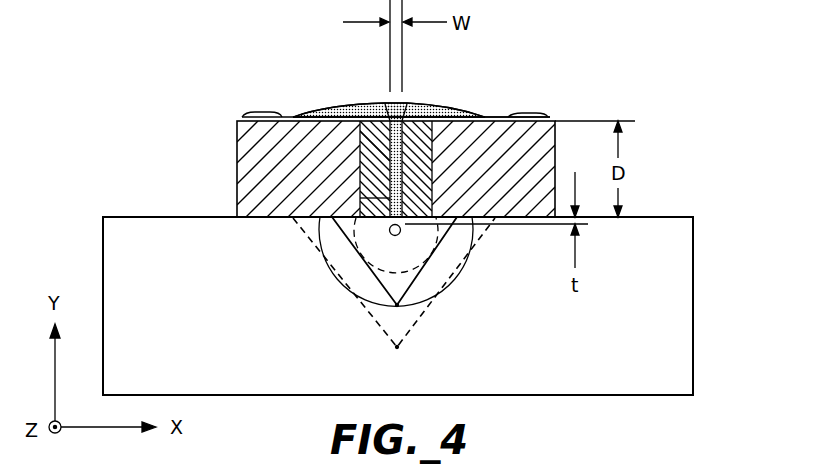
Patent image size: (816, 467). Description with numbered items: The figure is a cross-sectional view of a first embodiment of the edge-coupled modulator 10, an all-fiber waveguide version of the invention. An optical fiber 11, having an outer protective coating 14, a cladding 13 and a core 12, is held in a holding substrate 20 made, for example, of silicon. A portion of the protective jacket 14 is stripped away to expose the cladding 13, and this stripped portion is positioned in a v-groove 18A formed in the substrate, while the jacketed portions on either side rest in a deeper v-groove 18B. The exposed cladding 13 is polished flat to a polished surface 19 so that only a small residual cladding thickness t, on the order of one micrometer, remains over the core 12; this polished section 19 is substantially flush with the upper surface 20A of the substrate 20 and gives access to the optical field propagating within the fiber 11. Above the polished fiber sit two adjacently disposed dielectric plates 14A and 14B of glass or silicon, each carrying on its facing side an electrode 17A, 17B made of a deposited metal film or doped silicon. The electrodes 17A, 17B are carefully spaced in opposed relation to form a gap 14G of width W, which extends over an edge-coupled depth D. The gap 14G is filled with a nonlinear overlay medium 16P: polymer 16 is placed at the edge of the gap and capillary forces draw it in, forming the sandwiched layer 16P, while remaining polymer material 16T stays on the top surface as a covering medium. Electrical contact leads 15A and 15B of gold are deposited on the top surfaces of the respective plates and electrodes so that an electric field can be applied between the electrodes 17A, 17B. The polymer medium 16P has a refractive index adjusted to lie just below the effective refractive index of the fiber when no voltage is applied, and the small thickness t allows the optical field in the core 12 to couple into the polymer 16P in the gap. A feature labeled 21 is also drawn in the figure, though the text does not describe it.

The edge-coupled modulator 10 is at (642, 100).
The optical fiber 11 is at (316, 230).
The core 12 is at (390, 233).
The cladding 13 is at (462, 263).
The outer protective coating 14 is at (433, 280).
The first dielectric plate 14A is at (258, 144).
The second dielectric plate 14B is at (553, 120).
The gap 14G is at (390, 103).
The first electrical contact lead 15A is at (258, 114).
The second electrical contact lead 15B is at (546, 114).
The polymer 16 is at (483, 117).
The remaining polymer material 16T is at (323, 104).
The nonlinear overlay medium 16P is at (403, 104).
The first electrode 17A is at (357, 111).
The second electrode 17B is at (414, 108).
The v-groove 18A is at (403, 309).
The deeper v-groove 18B is at (380, 325).
The polished surface 19 is at (512, 116).
The holding substrate 20 is at (677, 245).
The upper surface of substrate 20A is at (632, 217).
The gap bottom 21 is at (360, 198).